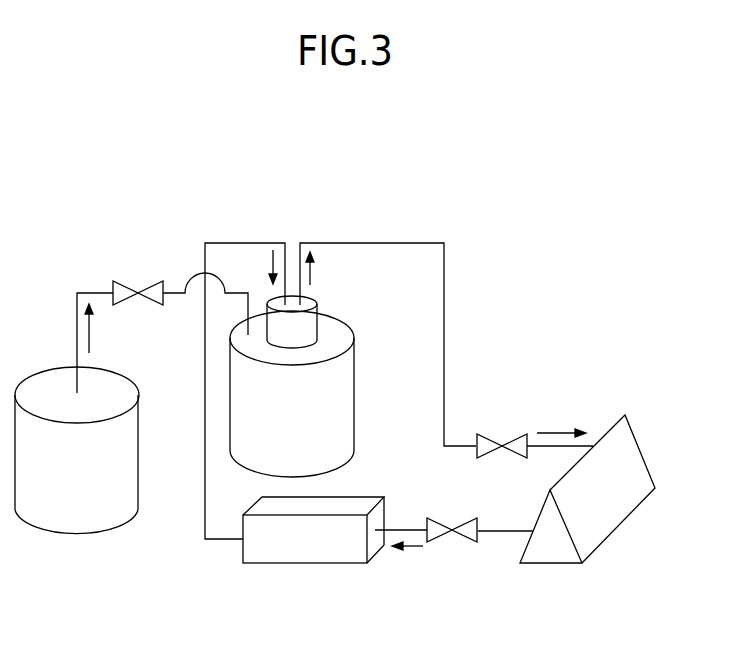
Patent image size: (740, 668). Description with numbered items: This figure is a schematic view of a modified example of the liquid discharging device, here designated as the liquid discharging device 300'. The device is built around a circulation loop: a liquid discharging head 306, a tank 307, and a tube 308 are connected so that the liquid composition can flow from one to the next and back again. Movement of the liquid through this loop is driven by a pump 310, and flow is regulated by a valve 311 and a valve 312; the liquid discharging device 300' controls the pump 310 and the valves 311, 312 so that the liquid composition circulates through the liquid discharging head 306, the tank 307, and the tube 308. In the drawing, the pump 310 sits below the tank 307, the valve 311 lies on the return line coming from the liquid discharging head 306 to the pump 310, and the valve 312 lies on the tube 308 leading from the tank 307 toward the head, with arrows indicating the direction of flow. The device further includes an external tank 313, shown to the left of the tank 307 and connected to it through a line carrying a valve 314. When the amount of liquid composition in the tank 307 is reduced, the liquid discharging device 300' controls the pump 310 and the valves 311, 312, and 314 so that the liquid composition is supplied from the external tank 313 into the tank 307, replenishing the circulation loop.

The liquid discharging device 300' is at (361, 389).
The liquid discharging head 306 is at (630, 425).
The tank 307 is at (355, 390).
The tube 308 is at (370, 243).
The pump 310 is at (303, 565).
The valve 311 is at (463, 543).
The valve 312 is at (492, 433).
The external tank 313 is at (77, 538).
The valve 314 is at (128, 281).